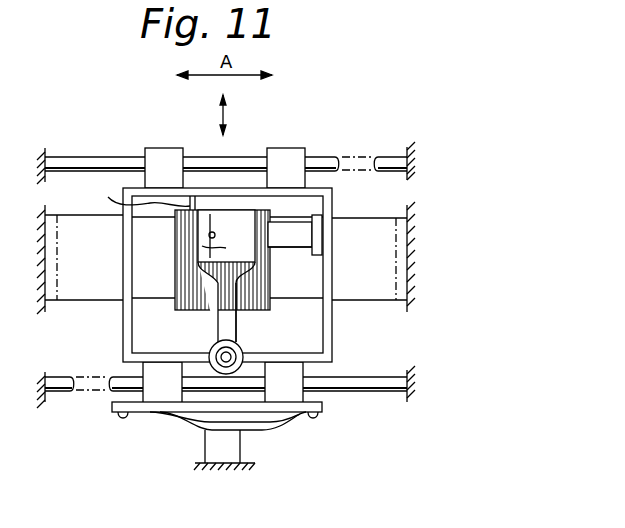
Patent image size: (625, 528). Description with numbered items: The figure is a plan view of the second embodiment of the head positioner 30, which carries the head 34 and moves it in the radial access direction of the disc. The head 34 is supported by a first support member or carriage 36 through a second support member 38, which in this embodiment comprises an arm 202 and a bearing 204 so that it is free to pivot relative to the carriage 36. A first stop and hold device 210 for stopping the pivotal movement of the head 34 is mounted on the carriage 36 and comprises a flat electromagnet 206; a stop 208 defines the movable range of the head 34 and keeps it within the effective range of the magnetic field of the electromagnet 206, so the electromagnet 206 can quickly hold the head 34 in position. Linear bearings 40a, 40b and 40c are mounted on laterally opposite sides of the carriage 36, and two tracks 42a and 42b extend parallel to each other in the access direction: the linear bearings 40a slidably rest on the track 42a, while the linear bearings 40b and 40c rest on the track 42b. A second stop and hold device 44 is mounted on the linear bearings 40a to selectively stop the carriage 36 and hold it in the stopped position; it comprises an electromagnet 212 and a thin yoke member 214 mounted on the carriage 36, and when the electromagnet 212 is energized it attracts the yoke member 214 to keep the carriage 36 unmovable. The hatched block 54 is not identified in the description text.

The head positioner 30 is at (408, 130).
The track 42b is at (82, 162).
The track 42a is at (381, 384).
The linear bearing 40c is at (165, 152).
The linear bearing 40b is at (300, 152).
The linear bearing 40a is at (160, 390).
The first support member or carriage 36 is at (334, 323).
The stop 208 is at (127, 197).
The cylinder block 54 is at (192, 300).
The head 34 is at (202, 234).
The second support member 38 is at (206, 328).
The arm 202 is at (238, 312).
The bearing 204 is at (236, 374).
The flat electromagnet 206 is at (295, 227).
The first stop and hold device 210 is at (298, 252).
The thin yoke member 214 is at (284, 420).
The second stop and hold device 44 is at (196, 452).
The electromagnet 212 is at (238, 452).